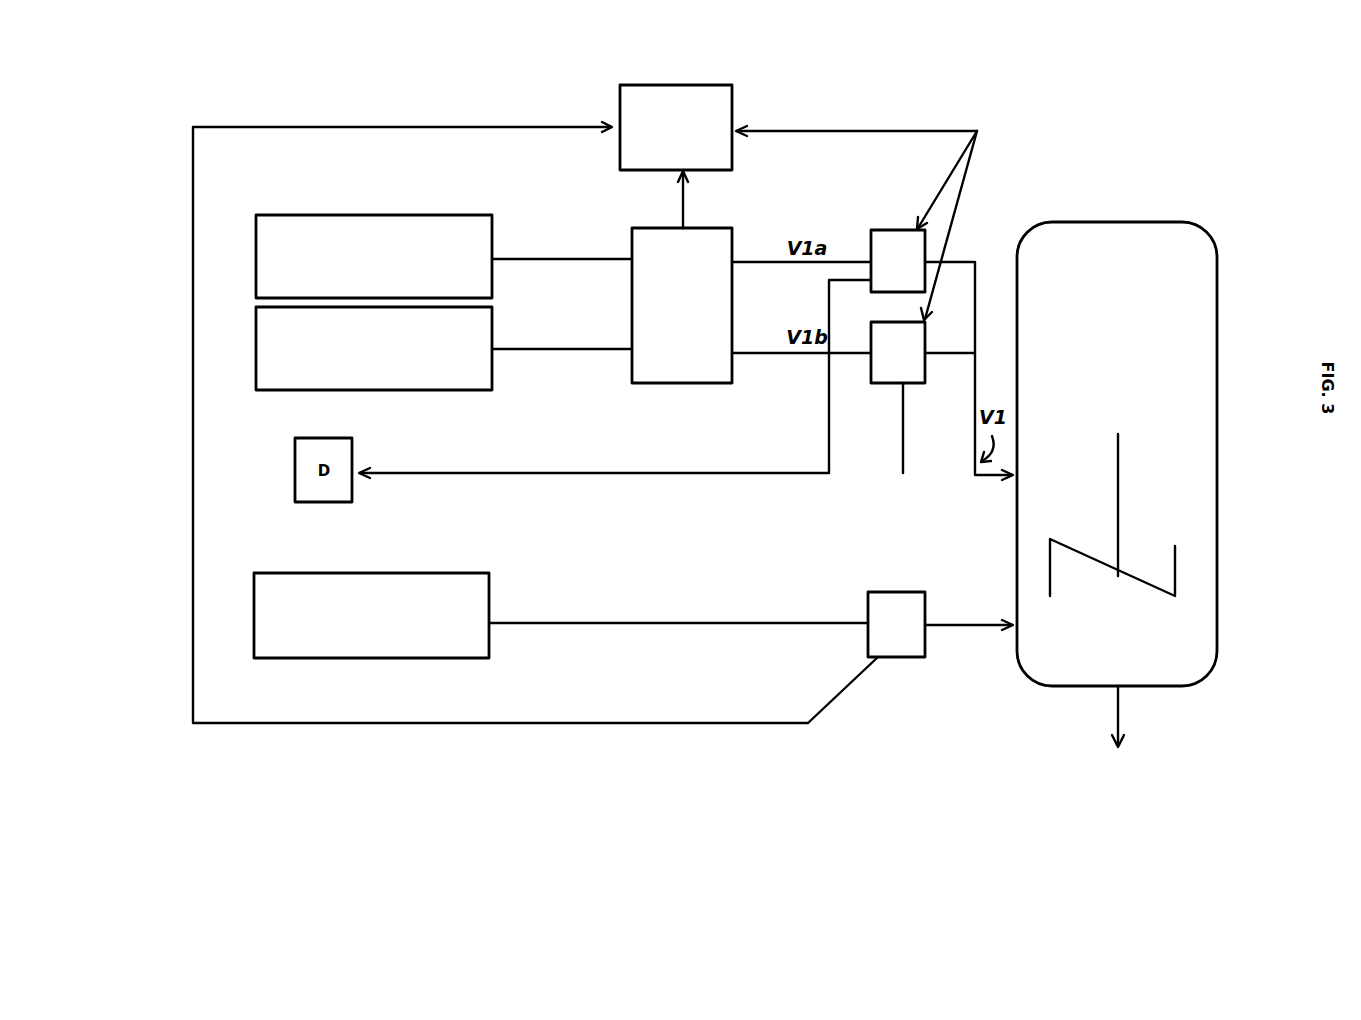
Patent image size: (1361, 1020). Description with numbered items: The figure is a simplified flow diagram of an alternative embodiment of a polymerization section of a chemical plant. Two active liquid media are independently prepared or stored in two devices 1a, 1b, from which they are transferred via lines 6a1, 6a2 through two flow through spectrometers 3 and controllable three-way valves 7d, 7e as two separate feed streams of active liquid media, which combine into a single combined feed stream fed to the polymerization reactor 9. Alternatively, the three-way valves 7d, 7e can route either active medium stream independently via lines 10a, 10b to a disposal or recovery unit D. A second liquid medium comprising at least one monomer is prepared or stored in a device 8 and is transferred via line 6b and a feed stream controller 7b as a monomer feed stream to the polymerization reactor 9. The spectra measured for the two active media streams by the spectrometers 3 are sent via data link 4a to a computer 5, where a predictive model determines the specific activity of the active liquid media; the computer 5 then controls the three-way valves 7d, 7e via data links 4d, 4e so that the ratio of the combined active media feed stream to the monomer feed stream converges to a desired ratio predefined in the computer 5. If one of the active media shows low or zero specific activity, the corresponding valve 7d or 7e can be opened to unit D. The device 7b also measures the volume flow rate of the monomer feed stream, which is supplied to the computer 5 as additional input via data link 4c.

The device 1a is at (374, 348).
The device 1b is at (374, 256).
The flow through spectrometer 3 is at (682, 305).
The data link 4a is at (700, 199).
The data link 4c is at (535, 411).
The data link 4d is at (942, 160).
The data link 4e is at (968, 190).
The computer 5 is at (676, 127).
The line 6a1 is at (533, 268).
The line 6a2 is at (533, 358).
The line 6b is at (672, 634).
The feed stream controller 7b is at (896, 624).
The controllable three-way valve 7d is at (898, 261).
The controllable three-way valve 7e is at (898, 352).
The device 8 is at (371, 615).
The polymerization reactor 9 is at (1117, 484).
The line 10a is at (826, 403).
The line 10b is at (908, 440).